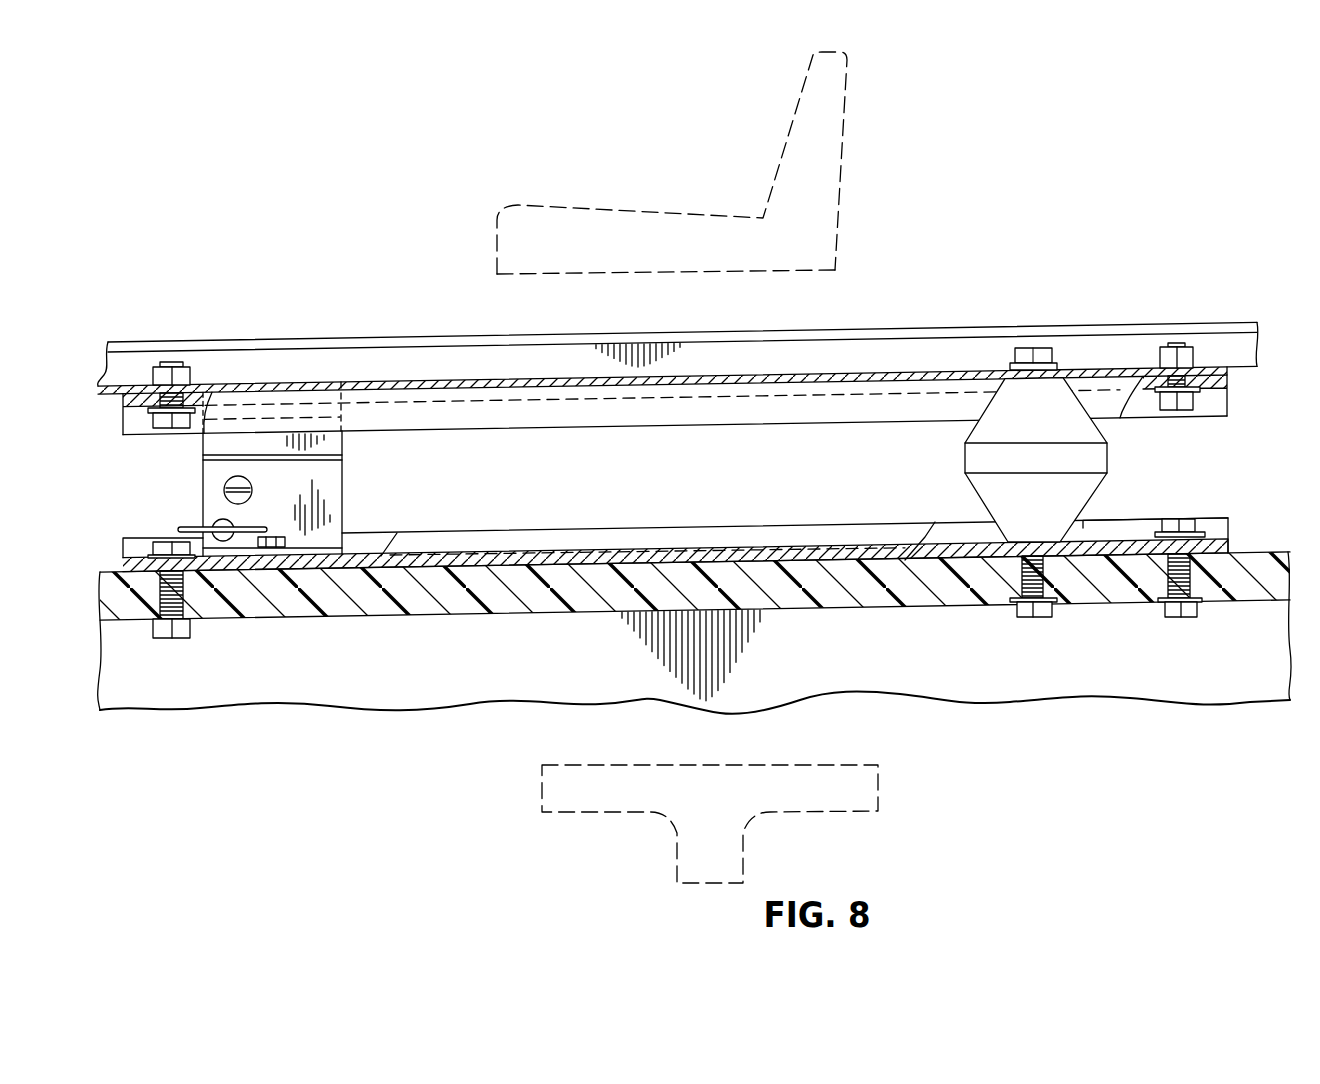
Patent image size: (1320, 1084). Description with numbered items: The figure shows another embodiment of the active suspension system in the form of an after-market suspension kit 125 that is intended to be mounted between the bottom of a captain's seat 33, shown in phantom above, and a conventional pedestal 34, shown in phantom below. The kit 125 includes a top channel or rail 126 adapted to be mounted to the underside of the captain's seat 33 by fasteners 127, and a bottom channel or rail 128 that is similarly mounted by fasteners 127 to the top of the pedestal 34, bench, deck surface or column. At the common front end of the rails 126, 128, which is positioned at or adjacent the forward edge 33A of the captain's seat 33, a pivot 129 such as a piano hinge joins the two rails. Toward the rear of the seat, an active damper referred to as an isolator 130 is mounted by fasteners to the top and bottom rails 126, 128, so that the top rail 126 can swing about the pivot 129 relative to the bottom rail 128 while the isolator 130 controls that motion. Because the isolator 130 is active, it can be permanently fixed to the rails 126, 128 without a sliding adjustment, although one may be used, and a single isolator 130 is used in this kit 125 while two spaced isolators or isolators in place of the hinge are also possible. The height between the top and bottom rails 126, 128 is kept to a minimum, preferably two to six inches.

The captain's seat 33 is at (690, 160).
The forward edge of captain's seat 33A is at (510, 277).
The pedestal 34 is at (878, 780).
The after-market suspension kit 125 is at (1105, 305).
The top channel or rail 126 is at (625, 429).
The fasteners 127 is at (1197, 397).
The bottom channel or rail 128 is at (1229, 516).
The pivot 129 is at (225, 490).
The isolator 130 is at (963, 460).